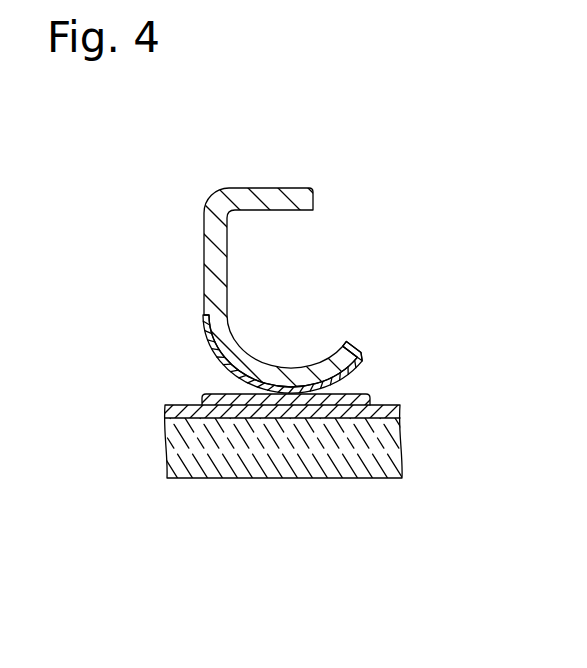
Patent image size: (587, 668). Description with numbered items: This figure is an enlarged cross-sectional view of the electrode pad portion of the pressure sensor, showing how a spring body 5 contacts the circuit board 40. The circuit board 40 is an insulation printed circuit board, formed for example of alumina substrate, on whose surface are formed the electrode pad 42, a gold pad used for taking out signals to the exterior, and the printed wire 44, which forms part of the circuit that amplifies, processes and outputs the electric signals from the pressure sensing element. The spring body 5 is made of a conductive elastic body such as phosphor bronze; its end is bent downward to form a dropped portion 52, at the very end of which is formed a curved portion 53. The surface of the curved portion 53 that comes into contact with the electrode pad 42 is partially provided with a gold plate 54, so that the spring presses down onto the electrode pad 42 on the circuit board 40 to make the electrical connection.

The terminal 5 is at (275, 250).
The dropped portion 52 is at (213, 258).
The curved portion 53 is at (296, 368).
The gold plate 54 is at (358, 382).
The circuit board 40 is at (266, 470).
The electrode pad 42 is at (225, 394).
The printed wire 44 is at (392, 407).